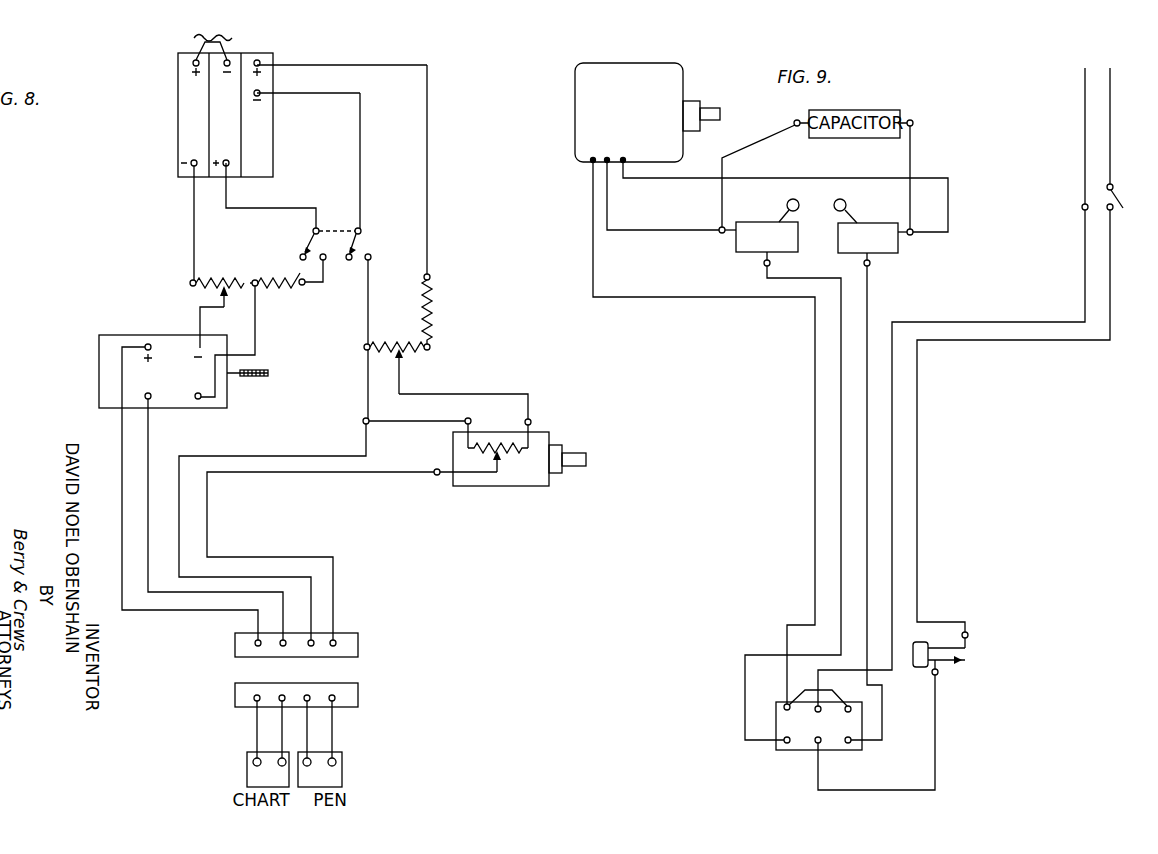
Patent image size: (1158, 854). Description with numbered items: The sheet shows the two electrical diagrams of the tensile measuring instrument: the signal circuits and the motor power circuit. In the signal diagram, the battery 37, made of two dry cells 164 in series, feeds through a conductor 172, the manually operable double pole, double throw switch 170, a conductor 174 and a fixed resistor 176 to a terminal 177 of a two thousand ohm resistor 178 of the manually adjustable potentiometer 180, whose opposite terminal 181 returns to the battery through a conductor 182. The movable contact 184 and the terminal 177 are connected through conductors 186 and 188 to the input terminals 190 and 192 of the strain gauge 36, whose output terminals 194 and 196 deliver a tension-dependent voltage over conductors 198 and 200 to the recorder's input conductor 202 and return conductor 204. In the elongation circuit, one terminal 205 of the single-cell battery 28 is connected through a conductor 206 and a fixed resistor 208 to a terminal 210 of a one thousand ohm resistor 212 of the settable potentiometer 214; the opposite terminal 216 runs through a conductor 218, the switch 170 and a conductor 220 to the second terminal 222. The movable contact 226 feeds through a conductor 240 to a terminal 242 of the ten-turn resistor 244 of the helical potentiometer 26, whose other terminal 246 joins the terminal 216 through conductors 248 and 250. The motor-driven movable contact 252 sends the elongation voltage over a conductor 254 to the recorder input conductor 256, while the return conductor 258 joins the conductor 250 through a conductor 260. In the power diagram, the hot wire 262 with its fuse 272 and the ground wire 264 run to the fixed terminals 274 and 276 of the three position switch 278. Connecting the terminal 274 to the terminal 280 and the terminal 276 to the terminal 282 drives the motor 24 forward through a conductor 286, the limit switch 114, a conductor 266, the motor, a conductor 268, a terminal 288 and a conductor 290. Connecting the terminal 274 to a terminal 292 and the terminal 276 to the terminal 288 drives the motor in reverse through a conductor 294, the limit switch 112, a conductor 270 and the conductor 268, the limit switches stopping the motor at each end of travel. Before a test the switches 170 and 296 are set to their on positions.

In FIG. 9, the motor 24 is at (566, 111).
In FIG. 8, the helical potentiometer 26 is at (565, 442).
In FIG. 8, the battery 28 is at (273, 140).
In FIG. 8, the strain gauge 36 is at (242, 390).
In FIG. 8, the battery 37 is at (199, 36).
In FIG. 9, the limit switch 112 is at (740, 252).
In FIG. 9, the limit switch 114 is at (898, 250).
In FIG. 8, the dry cells 164 is at (178, 104).
In FIG. 8, the double pole, double throw switch 170 is at (305, 236).
In FIG. 8, the conductor 172 is at (284, 208).
In FIG. 8, the conductor 174 is at (325, 271).
In FIG. 8, the fixed resistor 176 is at (279, 290).
In FIG. 8, the terminal 177 is at (256, 278).
In FIG. 8, the resistor 178 is at (218, 277).
In FIG. 8, the potentiometer 180 is at (203, 299).
In FIG. 8, the terminal 181 is at (191, 280).
In FIG. 8, the conductor 182 is at (193, 230).
In FIG. 8, the movable contact 184 is at (227, 309).
In FIG. 8, the conductor 186 is at (198, 325).
In FIG. 8, the conductor 188 is at (258, 345).
In FIG. 8, the input terminal 190 is at (195, 350).
In FIG. 8, the input terminal 192 is at (199, 400).
In FIG. 8, the output terminal 194 is at (149, 400).
In FIG. 8, the output terminal 196 is at (146, 342).
In FIG. 8, the conductor 198 is at (147, 520).
In FIG. 8, the conductor 200 is at (120, 480).
In FIG. 8, the input conductor 202 is at (280, 720).
In FIG. 8, the return conductor 204 is at (255, 742).
In FIG. 8, the terminal 205 is at (268, 56).
In FIG. 8, the conductor 206 is at (428, 208).
In FIG. 8, the fixed resistor 208 is at (433, 303).
In FIG. 8, the terminal 210 is at (431, 347).
In FIG. 8, the resistor 212 is at (393, 346).
In FIG. 8, the potentiometer 214 is at (380, 364).
In FIG. 8, the terminal 216 is at (363, 348).
In FIG. 8, the conductor 218 is at (370, 286).
In FIG. 8, the conductor 220 is at (363, 153).
In FIG. 8, the terminal 222 is at (263, 95).
In FIG. 8, the movable contact 226 is at (402, 375).
In FIG. 8, the conductor 240 is at (481, 393).
In FIG. 8, the terminal 242 is at (533, 420).
In FIG. 8, the resistor 244 is at (495, 443).
In FIG. 8, the terminal 246 is at (466, 418).
In FIG. 8, the conductor 248 is at (414, 424).
In FIG. 8, the conductor 250 is at (364, 408).
In FIG. 8, the movable contact 252 is at (499, 461).
In FIG. 8, the conductor 254 is at (356, 474).
In FIG. 8, the input conductor 256 is at (334, 722).
In FIG. 8, the return conductor 258 is at (309, 744).
In FIG. 8, the conductor 260 is at (314, 603).
In FIG. 9, the hot wire 262 is at (1112, 286).
In FIG. 9, the ground wire 264 is at (1083, 250).
In FIG. 9, the conductor 266 is at (672, 180).
In FIG. 9, the conductor 268 is at (592, 243).
In FIG. 9, the conductor 270 is at (637, 232).
In FIG. 9, the fuse 272 is at (957, 668).
In FIG. 9, the terminal 274 is at (822, 738).
In FIG. 9, the terminal 276 is at (815, 712).
In FIG. 9, the switch 278 is at (768, 752).
In FIG. 9, the terminal 280 is at (850, 745).
In FIG. 9, the terminal 282 is at (852, 706).
In FIG. 9, the conductor 286 is at (883, 717).
In FIG. 9, the terminal 288 is at (784, 704).
In FIG. 9, the conductor 290 is at (806, 690).
In FIG. 9, the terminal 292 is at (788, 745).
In FIG. 9, the conductor 294 is at (743, 703).
In FIG. 9, the switch 296 is at (1119, 197).